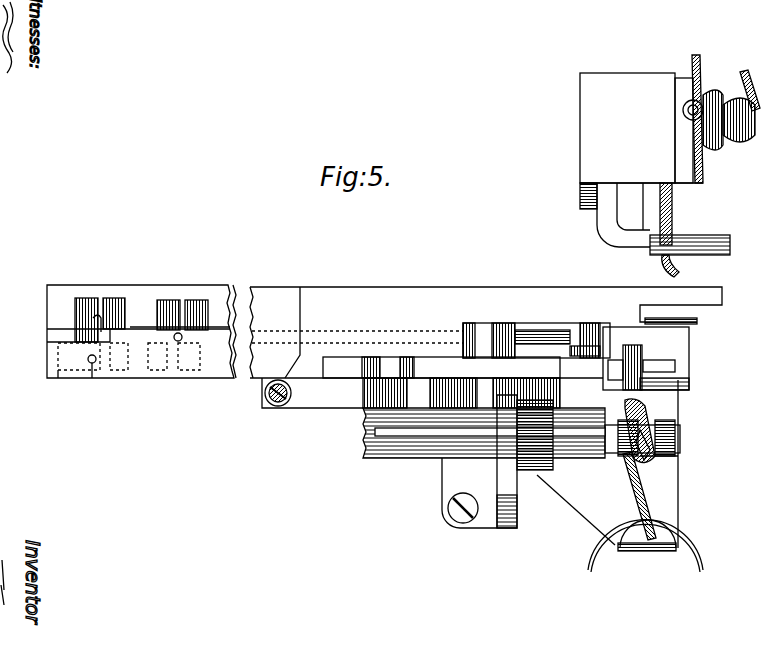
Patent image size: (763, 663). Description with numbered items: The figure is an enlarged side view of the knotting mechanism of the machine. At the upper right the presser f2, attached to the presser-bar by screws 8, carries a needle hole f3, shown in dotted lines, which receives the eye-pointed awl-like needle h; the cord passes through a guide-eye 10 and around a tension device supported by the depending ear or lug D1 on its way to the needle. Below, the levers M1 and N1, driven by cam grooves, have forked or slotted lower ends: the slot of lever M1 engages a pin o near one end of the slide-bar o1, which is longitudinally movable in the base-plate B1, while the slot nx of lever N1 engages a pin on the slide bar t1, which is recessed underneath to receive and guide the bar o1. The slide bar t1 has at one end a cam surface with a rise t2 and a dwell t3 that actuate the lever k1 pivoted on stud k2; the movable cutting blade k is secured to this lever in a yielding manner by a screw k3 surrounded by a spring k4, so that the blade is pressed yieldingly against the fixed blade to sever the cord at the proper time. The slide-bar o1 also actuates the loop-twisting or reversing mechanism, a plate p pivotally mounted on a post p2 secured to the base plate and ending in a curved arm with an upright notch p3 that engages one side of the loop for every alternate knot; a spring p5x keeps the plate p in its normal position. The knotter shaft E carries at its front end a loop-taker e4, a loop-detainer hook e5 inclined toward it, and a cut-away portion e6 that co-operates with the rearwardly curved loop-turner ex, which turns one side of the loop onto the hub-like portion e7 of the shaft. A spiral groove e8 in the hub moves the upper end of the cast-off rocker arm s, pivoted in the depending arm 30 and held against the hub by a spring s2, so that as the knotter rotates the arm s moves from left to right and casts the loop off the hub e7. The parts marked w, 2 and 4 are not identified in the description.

The lever M1 is at (86, 300).
The lever N1 is at (173, 312).
The slot nx is at (180, 334).
The slide bar t1 is at (274, 335).
The pin o is at (92, 363).
The slide-bar o1 is at (250, 378).
The base-plate B1 is at (385, 288).
The rise t2 is at (372, 360).
The dwell t3 is at (392, 364).
The stud k2 is at (512, 326).
The post or stud p2 is at (592, 327).
The lever k1 is at (541, 349).
The movable cutting blade k is at (612, 344).
The spring k4 is at (632, 356).
The washer plate w is at (675, 365).
The screw k3 is at (630, 372).
The upright notch p3 is at (686, 388).
The spring p5x is at (325, 400).
The plate p is at (505, 392).
The knotter shaft E is at (366, 455).
The bracket 2 is at (498, 478).
The collar 4 is at (535, 470).
The loop-turner ex is at (642, 420).
The hub-like portion e7 is at (678, 433).
The spiral groove e8 is at (678, 448).
The loop-detainer e5 is at (678, 463).
The loop-taker e4 is at (678, 478).
The cut-away portion e6 is at (636, 440).
The rocker arm s is at (642, 503).
The depending arm 30 is at (678, 530).
The spring s2 is at (700, 573).
The depending ear or lug D1 is at (587, 98).
The guide-eye 10 is at (686, 113).
The screws 8 is at (580, 208).
The needle h is at (673, 233).
The presser f2 is at (718, 252).
The needle hole f3 is at (672, 264).